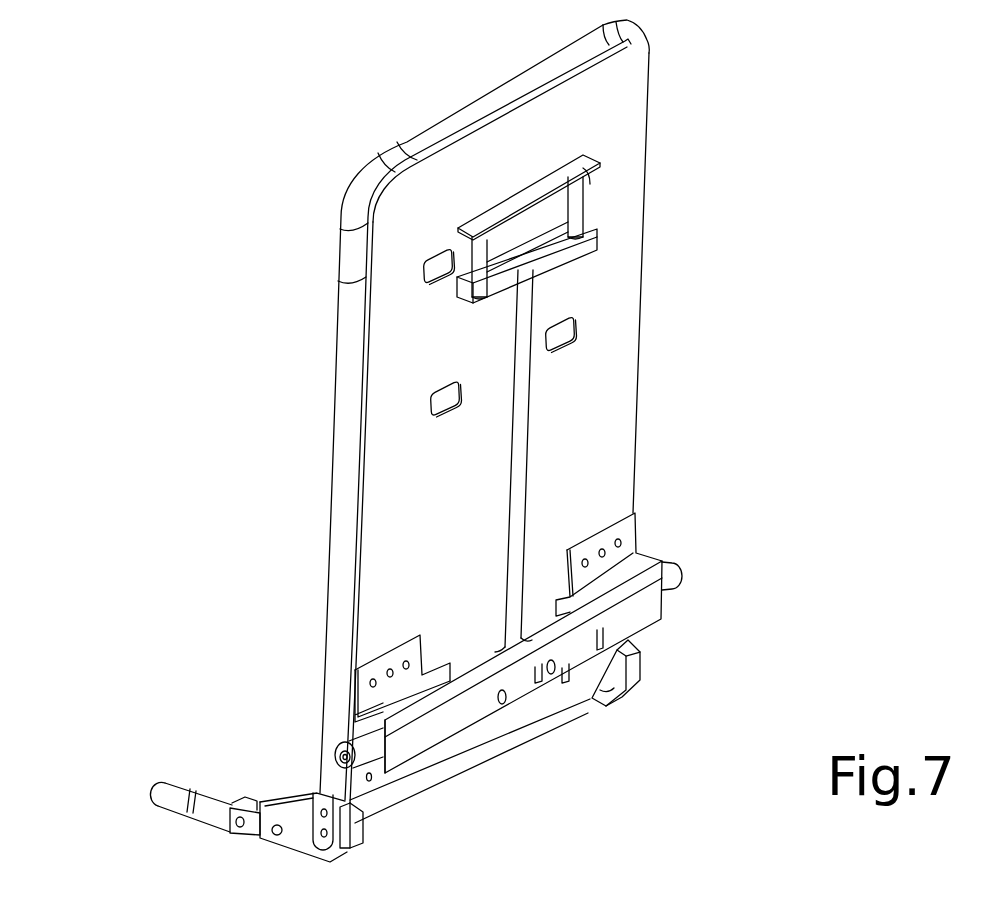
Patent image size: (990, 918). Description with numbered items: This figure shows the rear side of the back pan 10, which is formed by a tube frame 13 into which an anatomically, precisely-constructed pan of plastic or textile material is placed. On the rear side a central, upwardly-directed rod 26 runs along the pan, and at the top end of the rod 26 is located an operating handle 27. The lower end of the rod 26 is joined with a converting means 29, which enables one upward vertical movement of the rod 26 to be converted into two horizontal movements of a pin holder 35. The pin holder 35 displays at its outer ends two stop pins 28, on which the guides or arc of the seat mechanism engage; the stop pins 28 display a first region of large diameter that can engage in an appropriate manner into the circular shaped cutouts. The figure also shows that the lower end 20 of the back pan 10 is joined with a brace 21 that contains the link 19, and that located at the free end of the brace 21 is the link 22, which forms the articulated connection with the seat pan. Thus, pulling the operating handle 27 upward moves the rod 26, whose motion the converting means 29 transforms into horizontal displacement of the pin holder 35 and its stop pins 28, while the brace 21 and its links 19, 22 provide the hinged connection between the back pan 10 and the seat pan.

The back pan 10 is at (610, 122).
The tube frame 13 is at (347, 403).
The link 19 is at (277, 825).
The lower end 20 is at (333, 852).
The brace 21 is at (300, 838).
The link 22 is at (232, 802).
The rod 26 is at (523, 449).
The operating handle 27 is at (497, 213).
The stop pin 28 is at (672, 573).
The converting means 29 is at (475, 712).
The pin holder 35 is at (418, 722).